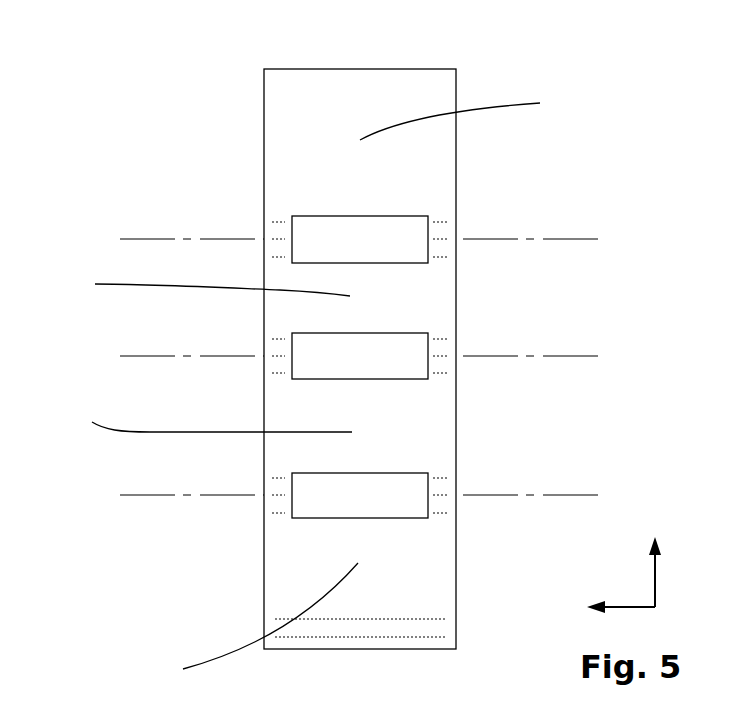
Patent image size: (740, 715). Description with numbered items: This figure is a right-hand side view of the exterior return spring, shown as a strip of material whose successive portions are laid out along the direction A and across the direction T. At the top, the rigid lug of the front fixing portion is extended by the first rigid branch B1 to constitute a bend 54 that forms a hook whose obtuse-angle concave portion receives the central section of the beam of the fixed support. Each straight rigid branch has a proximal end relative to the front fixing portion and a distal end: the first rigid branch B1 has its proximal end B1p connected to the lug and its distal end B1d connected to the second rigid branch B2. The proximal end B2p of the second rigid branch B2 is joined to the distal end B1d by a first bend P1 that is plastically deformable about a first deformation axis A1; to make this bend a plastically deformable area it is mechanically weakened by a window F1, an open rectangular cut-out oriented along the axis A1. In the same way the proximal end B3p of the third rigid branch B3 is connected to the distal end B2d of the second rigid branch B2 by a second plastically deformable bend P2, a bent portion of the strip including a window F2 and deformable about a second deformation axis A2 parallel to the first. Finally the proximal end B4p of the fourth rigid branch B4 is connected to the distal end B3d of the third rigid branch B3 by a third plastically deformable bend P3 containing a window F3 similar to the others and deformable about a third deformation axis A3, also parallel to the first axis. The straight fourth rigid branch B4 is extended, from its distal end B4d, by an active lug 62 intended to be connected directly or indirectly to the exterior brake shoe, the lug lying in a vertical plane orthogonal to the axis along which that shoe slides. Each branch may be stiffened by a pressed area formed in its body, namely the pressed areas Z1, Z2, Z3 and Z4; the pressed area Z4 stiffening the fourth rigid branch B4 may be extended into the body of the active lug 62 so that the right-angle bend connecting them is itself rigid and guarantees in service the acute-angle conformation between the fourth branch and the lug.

The bend 54 is at (417, 69).
The active lug 62 is at (408, 650).
The window F1 is at (340, 216).
The window F2 is at (393, 379).
The window F3 is at (338, 473).
The first bend P1 is at (442, 228).
The second bend P2 is at (442, 345).
The third bend P3 is at (440, 480).
The first deformation axis A1 is at (375, 239).
The second deformation axis A2 is at (375, 356).
The third deformation axis A3 is at (375, 495).
The first rigid branch B1 is at (392, 165).
The second rigid branch B2 is at (416, 296).
The third rigid branch B3 is at (418, 414).
The fourth rigid branch B4 is at (406, 573).
The proximal end of first rigid branch B1p is at (282, 80).
The distal end of first rigid branch B1d is at (282, 215).
The proximal end of second rigid branch B2p is at (282, 265).
The distal end of second rigid branch B2d is at (281, 337).
The proximal end of third rigid branch B3p is at (281, 374).
The distal end of third rigid branch B3d is at (279, 480).
The proximal end of fourth rigid branch B4p is at (280, 522).
The distal end of fourth rigid branch B4d is at (290, 625).
The pressed area Z1 is at (467, 119).
The pressed area Z2 is at (192, 287).
The pressed area Z3 is at (201, 426).
The pressed area Z4 is at (245, 620).
The axial direction A is at (663, 569).
The tangential direction T is at (613, 601).